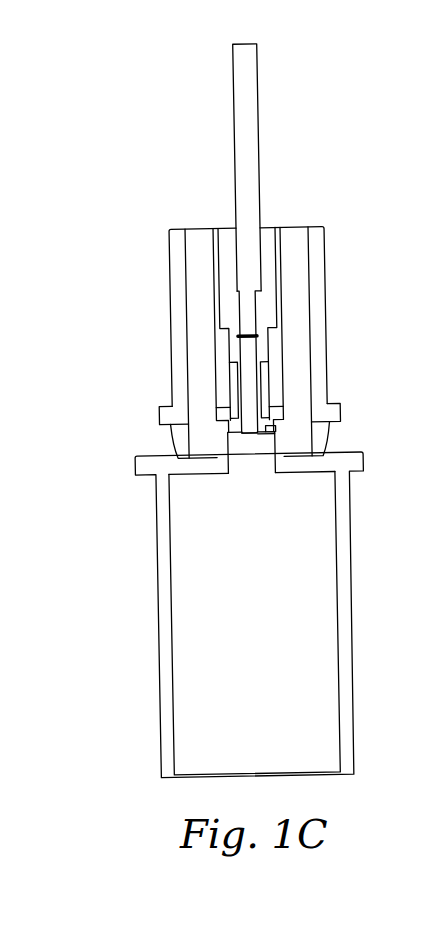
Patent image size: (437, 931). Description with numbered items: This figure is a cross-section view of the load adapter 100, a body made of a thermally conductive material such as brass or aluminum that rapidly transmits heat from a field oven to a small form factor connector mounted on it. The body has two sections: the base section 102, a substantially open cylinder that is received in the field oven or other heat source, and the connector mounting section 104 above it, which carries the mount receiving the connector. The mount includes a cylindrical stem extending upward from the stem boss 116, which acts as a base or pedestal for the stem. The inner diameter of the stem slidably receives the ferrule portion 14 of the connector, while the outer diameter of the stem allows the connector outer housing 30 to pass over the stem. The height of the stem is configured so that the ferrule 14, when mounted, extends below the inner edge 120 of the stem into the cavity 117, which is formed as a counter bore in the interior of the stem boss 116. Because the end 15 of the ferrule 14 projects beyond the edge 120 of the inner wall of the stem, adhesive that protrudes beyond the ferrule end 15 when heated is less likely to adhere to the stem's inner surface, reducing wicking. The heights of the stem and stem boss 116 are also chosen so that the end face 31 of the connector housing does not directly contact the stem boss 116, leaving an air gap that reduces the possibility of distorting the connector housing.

The load adapter 100 is at (300, 80).
The base section 102 is at (134, 600).
The connector mounting section 104 is at (150, 288).
The ferrule portion 14 is at (250, 360).
The end of ferrule 15 is at (241, 430).
The connector outer housing 30 is at (287, 333).
The end face of connector housing 31 is at (284, 410).
The stem boss 116 is at (280, 436).
The cavity 117 is at (258, 465).
The inner edge of stem 120 is at (284, 428).